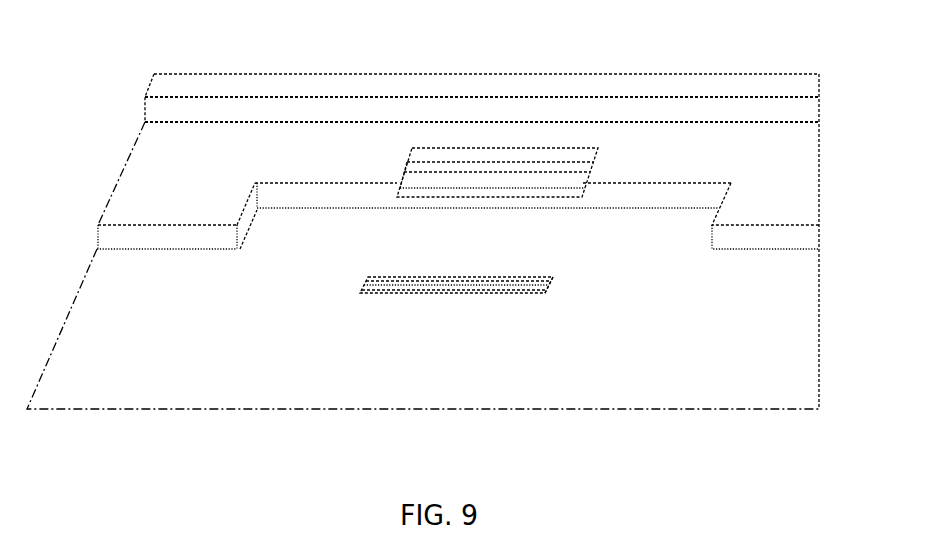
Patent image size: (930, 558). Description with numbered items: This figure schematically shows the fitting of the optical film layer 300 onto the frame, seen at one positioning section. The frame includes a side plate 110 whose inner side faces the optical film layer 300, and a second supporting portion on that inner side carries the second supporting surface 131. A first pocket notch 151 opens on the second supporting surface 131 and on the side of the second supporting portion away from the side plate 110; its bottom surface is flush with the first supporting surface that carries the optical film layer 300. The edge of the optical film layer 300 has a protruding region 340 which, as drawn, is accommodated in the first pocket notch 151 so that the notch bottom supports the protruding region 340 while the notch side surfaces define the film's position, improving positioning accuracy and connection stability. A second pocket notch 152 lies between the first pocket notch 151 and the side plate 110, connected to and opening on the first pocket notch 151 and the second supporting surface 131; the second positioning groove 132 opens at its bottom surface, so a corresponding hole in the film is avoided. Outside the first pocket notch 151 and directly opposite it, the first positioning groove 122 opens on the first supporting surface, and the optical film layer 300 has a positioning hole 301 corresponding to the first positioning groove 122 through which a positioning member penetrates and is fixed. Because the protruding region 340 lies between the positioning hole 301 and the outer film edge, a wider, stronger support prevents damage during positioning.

The side plate 110 is at (723, 83).
The second supporting surface 131 is at (193, 133).
The second positioning groove 132 is at (507, 180).
The first pocket notch 151 is at (282, 199).
The second pocket notch 152 is at (428, 157).
The protruding region 340 is at (618, 224).
The optical film layer 300 is at (315, 360).
The first positioning groove 122 is at (440, 292).
The positioning hole 301 is at (548, 281).